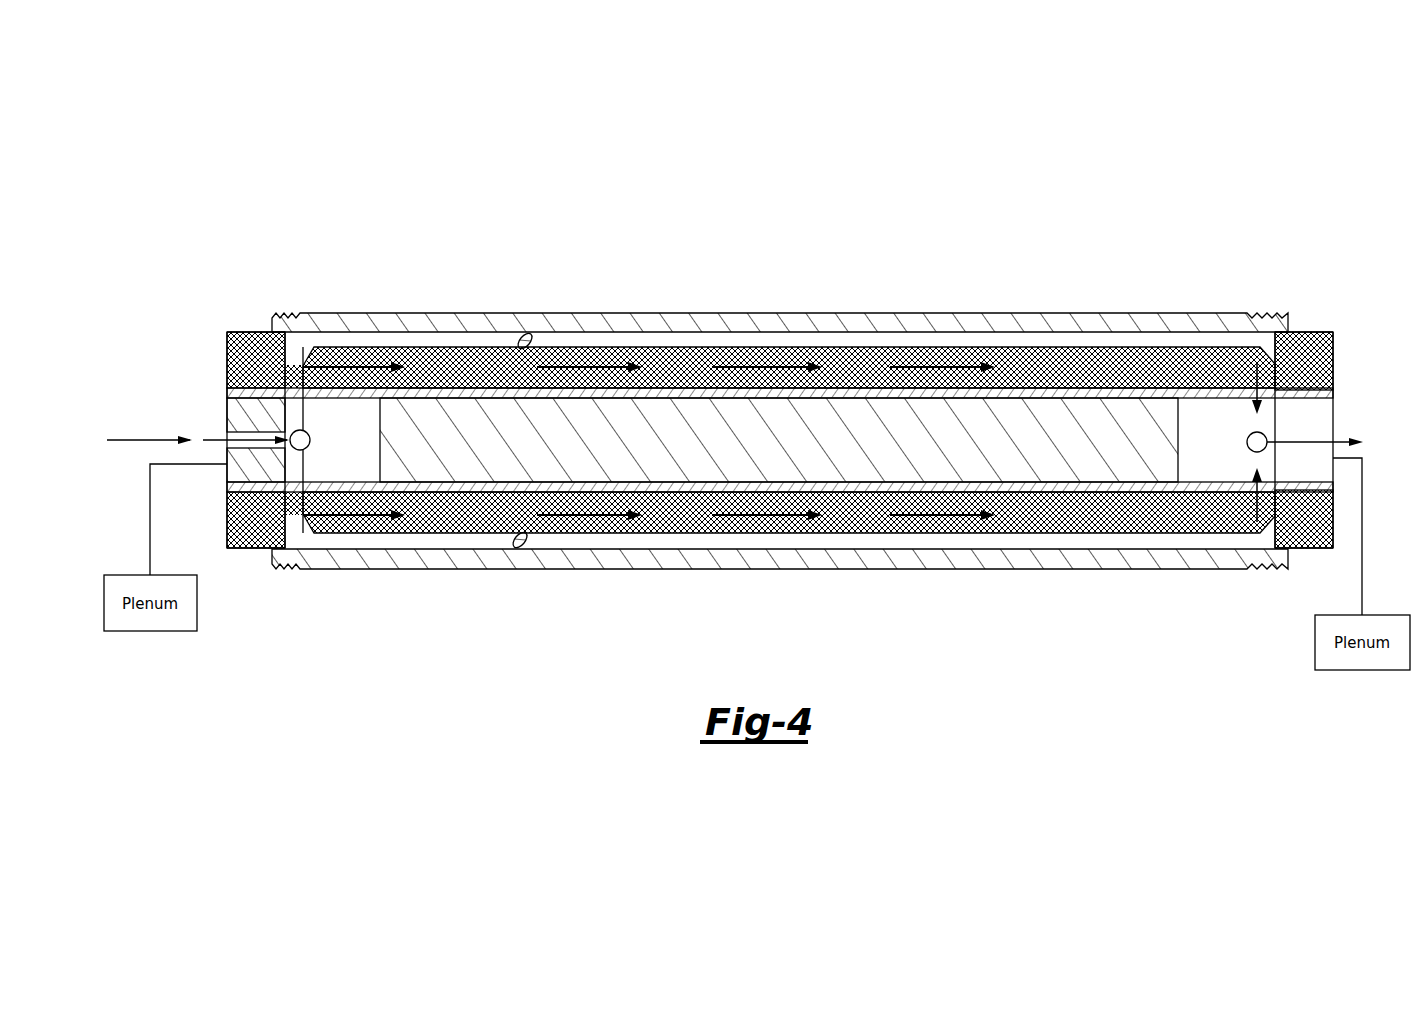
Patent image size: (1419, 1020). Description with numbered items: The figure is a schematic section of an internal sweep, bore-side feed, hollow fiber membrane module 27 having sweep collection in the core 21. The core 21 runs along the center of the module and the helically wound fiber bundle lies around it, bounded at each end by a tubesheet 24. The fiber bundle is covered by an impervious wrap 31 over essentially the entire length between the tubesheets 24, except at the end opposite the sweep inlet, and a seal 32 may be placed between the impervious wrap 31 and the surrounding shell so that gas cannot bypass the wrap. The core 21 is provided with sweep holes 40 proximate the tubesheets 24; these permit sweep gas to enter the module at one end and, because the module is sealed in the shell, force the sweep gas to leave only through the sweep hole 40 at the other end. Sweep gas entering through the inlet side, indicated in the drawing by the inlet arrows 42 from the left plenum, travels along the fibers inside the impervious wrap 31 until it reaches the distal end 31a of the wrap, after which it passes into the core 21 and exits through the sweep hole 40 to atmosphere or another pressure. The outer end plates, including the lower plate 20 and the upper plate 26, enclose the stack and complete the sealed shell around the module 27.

The bottom end plate 20 is at (928, 548).
The core 21 is at (943, 399).
The tubesheet 24 is at (243, 346).
The top end plate 26 is at (805, 313).
The interior sweep bore side feed module 27 is at (1032, 238).
The impervious wrap 31 is at (680, 347).
The distal end of the impervious wrap 31a is at (1228, 350).
The seal 32 is at (518, 338).
The sweep hole 40 is at (309, 436).
The inlet channel 42 is at (227, 434).